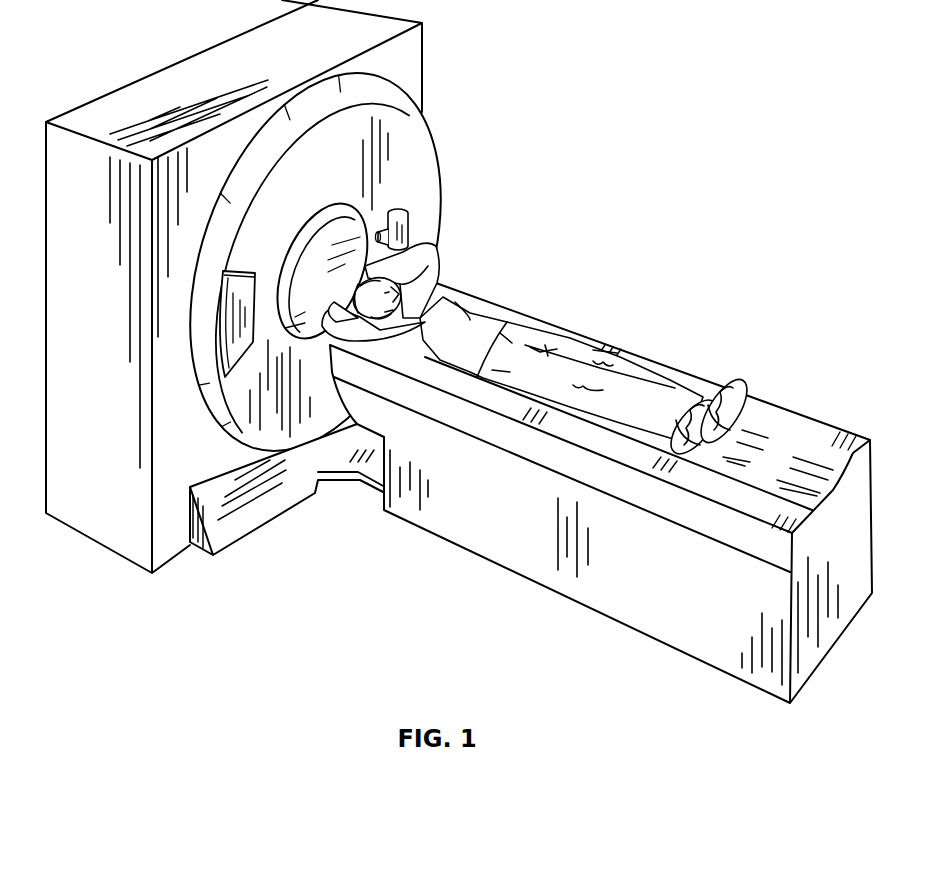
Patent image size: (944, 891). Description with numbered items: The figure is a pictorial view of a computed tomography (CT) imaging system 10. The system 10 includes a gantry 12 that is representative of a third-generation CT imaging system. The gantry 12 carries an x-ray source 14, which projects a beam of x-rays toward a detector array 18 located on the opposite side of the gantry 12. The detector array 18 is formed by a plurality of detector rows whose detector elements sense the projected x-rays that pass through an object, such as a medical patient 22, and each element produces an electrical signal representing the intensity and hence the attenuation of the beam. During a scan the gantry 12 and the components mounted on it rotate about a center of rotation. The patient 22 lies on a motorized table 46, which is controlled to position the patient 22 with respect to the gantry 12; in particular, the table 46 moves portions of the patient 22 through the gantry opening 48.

The computed tomography (CT) imaging system 10 is at (459, 351).
The gantry 12 is at (270, 286).
The x-ray source 14 is at (408, 230).
The detector array 18 is at (234, 358).
The medical patient 22 is at (477, 310).
The motorized table 46 is at (487, 522).
The gantry opening 48 is at (300, 232).